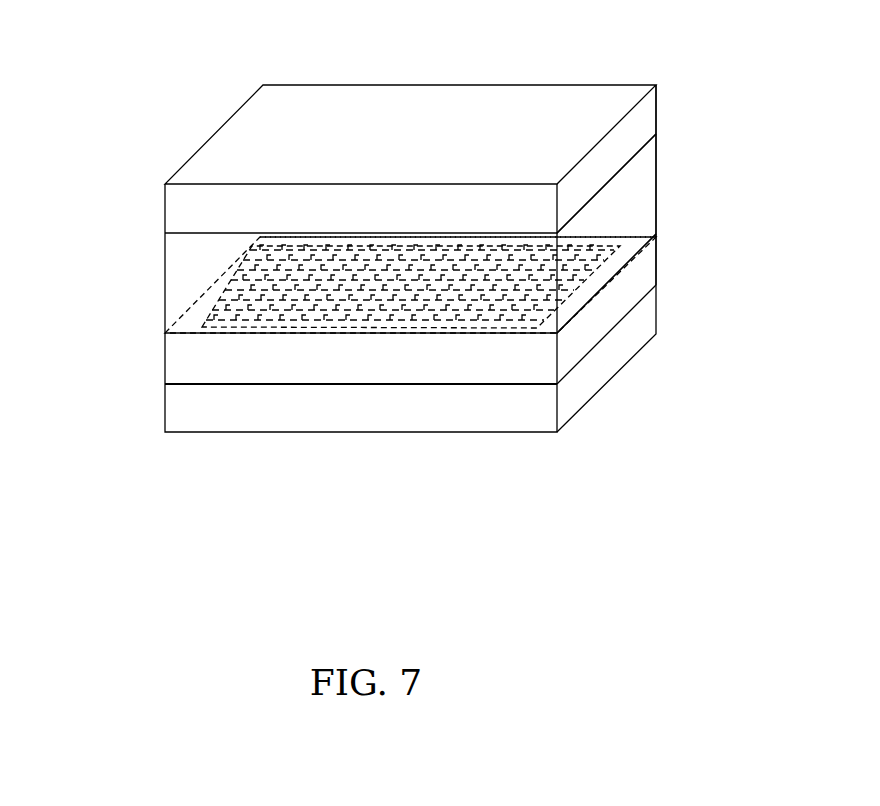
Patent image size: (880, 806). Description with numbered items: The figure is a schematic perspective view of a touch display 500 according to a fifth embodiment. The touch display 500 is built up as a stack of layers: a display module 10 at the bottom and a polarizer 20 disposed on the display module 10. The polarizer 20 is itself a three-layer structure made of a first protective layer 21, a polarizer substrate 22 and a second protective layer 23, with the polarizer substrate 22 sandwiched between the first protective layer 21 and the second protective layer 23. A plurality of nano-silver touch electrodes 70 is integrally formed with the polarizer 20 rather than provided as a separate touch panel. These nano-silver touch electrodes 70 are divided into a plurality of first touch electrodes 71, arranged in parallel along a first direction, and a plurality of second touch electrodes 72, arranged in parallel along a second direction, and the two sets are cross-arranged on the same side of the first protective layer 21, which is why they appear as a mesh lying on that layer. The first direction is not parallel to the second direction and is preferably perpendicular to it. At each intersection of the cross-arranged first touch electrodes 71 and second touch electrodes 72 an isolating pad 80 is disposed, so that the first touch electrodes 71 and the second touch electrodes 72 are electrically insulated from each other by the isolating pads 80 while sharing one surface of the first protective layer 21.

The touch display 500 is at (232, 40).
The display module 10 is at (643, 327).
The polarizer 20 is at (735, 113).
The first protective layer 21 is at (643, 265).
The polarizer substrate 22 is at (643, 203).
The second protective layer 23 is at (643, 127).
The nano-silver touch electrodes 70 is at (80, 230).
The first touch electrodes 71 is at (232, 305).
The second touch electrodes 72 is at (287, 275).
The isolating pads 80 is at (333, 257).